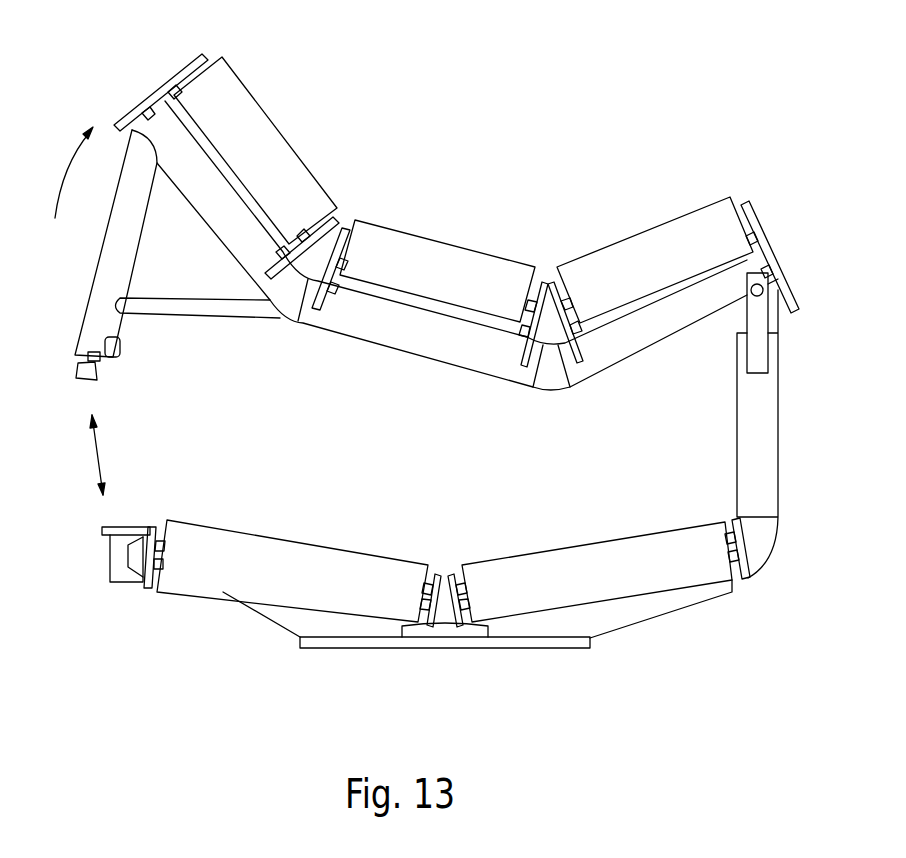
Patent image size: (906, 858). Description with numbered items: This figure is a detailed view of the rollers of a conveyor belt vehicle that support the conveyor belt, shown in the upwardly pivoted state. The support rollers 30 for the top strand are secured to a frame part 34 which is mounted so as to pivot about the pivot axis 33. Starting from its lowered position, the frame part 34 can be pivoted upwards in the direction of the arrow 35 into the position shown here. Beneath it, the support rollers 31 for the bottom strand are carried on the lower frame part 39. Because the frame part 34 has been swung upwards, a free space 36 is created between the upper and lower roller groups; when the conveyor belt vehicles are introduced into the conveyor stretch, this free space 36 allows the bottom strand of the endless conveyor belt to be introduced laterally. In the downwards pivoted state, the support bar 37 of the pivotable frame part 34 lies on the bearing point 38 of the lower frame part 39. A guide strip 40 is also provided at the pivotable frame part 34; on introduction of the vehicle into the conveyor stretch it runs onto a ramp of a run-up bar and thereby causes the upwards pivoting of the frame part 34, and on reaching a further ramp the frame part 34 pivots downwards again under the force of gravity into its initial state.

The support rollers for the top strand 30 is at (248, 140).
The support rollers for the bottom strand 31 is at (302, 560).
The pivot axis 33 is at (754, 296).
The frame part 34 is at (392, 323).
The arrow 35 is at (65, 185).
The free space 36 is at (93, 455).
The support bar 37 is at (122, 248).
The bearing point 38 is at (127, 532).
The lower frame part 39 is at (323, 625).
The guide strip 40 is at (167, 307).